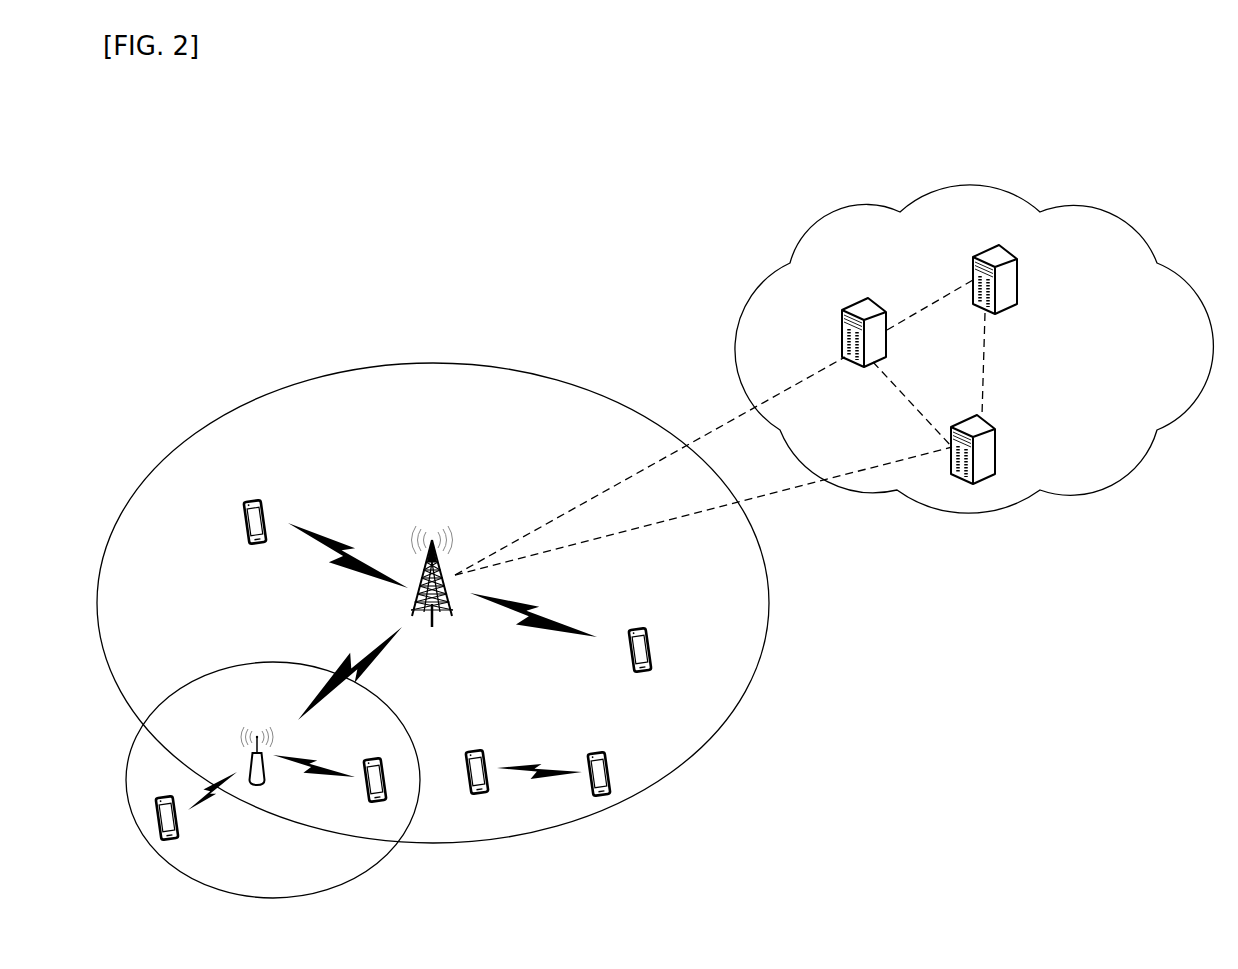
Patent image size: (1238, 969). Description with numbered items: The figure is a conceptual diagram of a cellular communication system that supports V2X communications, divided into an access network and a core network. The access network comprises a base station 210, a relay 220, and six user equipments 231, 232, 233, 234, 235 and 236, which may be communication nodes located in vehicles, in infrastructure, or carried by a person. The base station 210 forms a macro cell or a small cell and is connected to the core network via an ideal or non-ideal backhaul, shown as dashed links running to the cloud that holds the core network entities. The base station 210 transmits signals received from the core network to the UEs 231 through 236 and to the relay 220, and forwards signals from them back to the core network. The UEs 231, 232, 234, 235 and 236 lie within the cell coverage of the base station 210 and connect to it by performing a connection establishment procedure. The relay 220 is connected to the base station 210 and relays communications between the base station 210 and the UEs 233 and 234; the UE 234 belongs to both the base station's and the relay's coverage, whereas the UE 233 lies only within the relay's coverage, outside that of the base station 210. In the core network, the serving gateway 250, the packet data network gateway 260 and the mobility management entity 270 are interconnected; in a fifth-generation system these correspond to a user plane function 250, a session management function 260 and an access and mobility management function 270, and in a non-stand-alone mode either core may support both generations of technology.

The base station 210 is at (431, 542).
The relay 220 is at (255, 734).
The user equipment 231 is at (251, 500).
The user equipment 232 is at (640, 628).
The user equipment 233 is at (172, 842).
The user equipment 234 is at (377, 803).
The user equipment 235 is at (473, 750).
The user equipment 236 is at (593, 752).
The serving gateway 250 is at (862, 298).
The packet data network gateway 260 is at (1018, 277).
The mobility management entity 270 is at (994, 447).